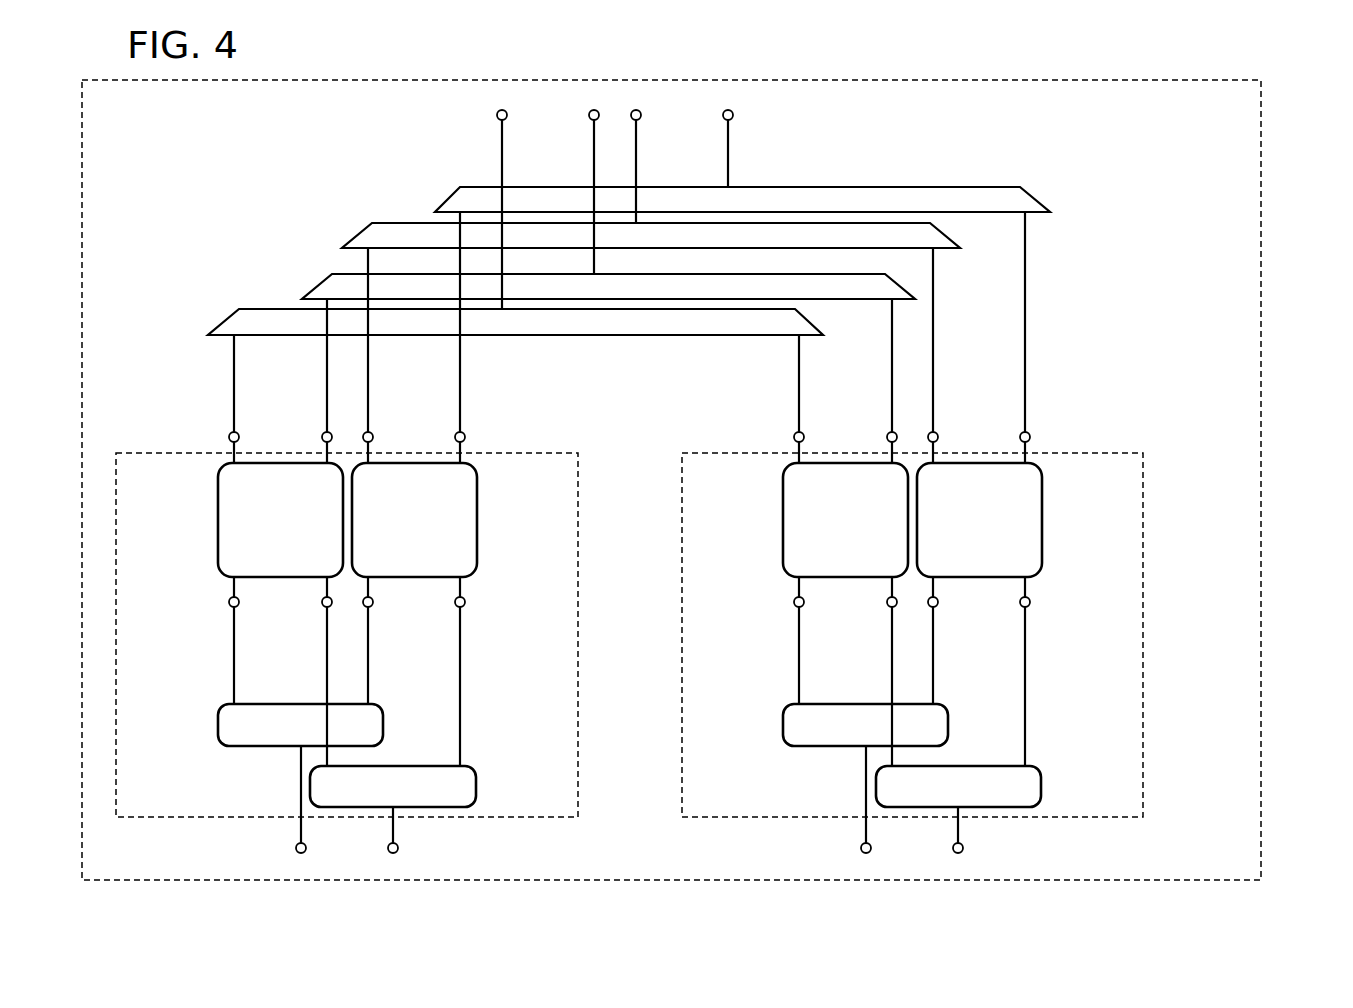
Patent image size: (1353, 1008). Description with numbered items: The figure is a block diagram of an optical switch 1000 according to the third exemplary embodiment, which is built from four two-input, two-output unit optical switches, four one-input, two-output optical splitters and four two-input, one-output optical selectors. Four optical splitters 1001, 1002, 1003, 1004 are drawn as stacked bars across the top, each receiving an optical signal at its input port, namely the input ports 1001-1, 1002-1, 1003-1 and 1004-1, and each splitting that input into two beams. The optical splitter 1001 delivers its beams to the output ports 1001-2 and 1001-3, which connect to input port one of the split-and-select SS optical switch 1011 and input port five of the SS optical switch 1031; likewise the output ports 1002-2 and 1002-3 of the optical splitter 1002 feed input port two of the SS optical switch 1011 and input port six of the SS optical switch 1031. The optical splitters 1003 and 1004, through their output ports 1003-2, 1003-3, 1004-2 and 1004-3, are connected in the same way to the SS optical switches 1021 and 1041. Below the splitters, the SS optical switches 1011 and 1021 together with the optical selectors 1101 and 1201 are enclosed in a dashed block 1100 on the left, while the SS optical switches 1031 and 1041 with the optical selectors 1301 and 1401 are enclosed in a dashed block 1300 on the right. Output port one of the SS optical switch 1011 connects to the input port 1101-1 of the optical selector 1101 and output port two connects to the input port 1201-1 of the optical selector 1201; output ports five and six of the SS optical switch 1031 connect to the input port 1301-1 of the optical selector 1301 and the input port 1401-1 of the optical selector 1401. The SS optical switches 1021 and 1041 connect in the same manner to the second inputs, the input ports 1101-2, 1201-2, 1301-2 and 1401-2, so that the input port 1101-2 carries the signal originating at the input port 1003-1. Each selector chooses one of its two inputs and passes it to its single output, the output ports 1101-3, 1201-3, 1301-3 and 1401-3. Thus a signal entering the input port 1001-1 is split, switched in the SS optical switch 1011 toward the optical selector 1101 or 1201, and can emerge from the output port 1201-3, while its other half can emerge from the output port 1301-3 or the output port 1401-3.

The optical switch 1000 is at (1262, 146).
The optical splitter 1001 is at (239, 310).
The optical splitter 1002 is at (332, 275).
The optical splitter 1003 is at (372, 224).
The optical splitter 1004 is at (460, 188).
The input port 1001-1 is at (502, 164).
The second bus line terminal 1002-1 is at (594, 164).
The input port 1003-1 is at (660, 164).
The fourth bus line terminal 1004-1 is at (752, 164).
The output port 1001-2 is at (260, 422).
The output port 1002-2 is at (327, 380).
The third bus line branch terminal (left module) 1003-2 is at (394, 422).
The fourth bus line branch terminal (left module) 1004-2 is at (460, 380).
The output port 1001-3 is at (825, 424).
The output port 1002-3 is at (892, 382).
The third bus line branch terminal (right module) 1003-3 is at (959, 424).
The fourth bus line branch terminal (right module) 1004-3 is at (1025, 382).
The SS optical switch 1011 is at (218, 521).
The SS optical switch 1021 is at (477, 520).
The SS optical switch 1031 is at (783, 523).
The SS optical switch 1041 is at (1042, 520).
The first switching module 1100 is at (578, 501).
The second switching module 1300 is at (1143, 501).
The optical selector 1101 is at (218, 725).
The optical selector 1201 is at (476, 784).
The optical selector 1301 is at (783, 725).
The optical selector 1401 is at (1041, 784).
The input port 1101-1 is at (260, 684).
The input port 1101-2 is at (394, 684).
The output terminal of combiner 1101 1101-3 is at (296, 849).
The input port 1201-1 is at (327, 644).
The second input terminal of combiner 1201 1201-2 is at (460, 644).
The output port 1201-3 is at (398, 848).
The input port 1301-1 is at (825, 684).
The second input terminal of combiner 1301 1301-2 is at (959, 684).
The output port 1301-3 is at (861, 849).
The input port 1401-1 is at (892, 644).
The second input terminal of combiner 1401 1401-2 is at (1025, 644).
The output port 1401-3 is at (963, 848).